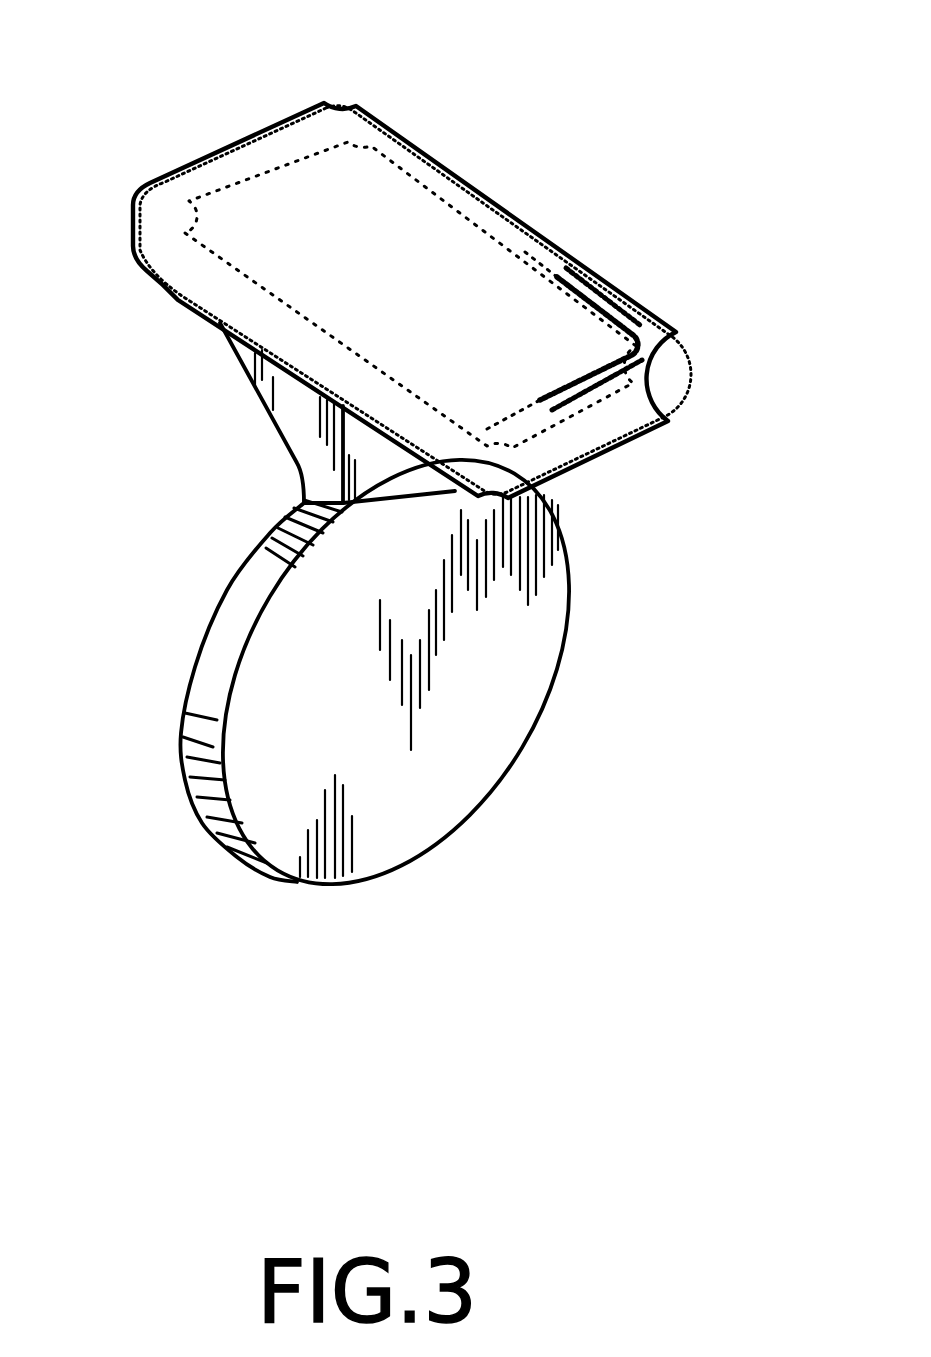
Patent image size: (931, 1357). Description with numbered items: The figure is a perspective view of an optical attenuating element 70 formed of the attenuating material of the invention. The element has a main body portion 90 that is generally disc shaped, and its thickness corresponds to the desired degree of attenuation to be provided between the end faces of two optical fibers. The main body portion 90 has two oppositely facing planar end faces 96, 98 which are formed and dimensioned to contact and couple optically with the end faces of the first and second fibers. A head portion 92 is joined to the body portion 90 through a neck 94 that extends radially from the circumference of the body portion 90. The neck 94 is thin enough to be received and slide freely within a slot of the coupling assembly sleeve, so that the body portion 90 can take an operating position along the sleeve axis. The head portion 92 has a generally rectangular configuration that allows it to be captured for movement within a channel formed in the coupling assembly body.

The optical attenuating element 70 is at (360, 538).
The main body portion 90 is at (335, 726).
The head portion 92 is at (257, 173).
The neck 94 is at (283, 401).
The planar end face 96 is at (224, 598).
The planar end face 98 is at (287, 780).